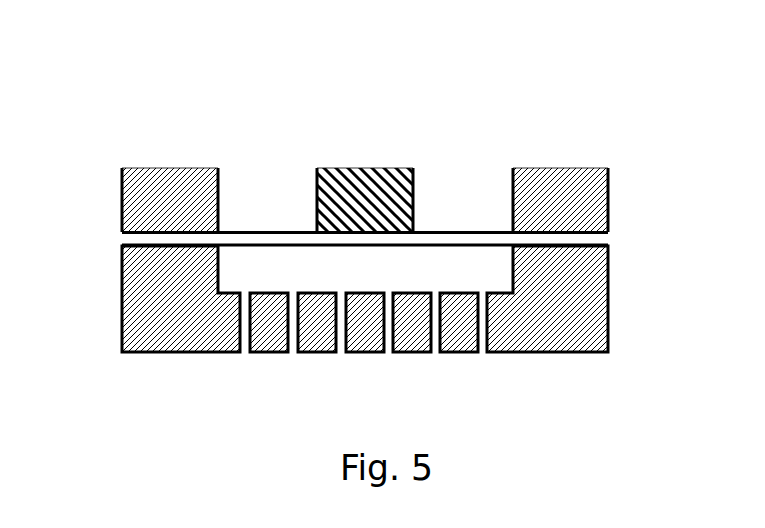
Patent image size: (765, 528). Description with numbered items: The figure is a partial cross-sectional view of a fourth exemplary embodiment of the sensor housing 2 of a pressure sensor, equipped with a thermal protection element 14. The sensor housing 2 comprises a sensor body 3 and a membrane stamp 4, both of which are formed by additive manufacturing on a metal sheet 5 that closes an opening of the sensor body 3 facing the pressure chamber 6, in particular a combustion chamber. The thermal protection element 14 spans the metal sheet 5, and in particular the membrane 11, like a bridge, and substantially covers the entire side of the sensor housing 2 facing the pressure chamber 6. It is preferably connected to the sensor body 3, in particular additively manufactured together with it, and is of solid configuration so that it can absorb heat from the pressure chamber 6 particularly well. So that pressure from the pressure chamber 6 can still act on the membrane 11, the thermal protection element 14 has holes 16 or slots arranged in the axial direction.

The sensor housing 2 is at (100, 142).
The sensor body 3 is at (608, 196).
The membrane stamp 4 is at (413, 195).
The metal sheet 5 is at (609, 239).
The pressure chamber 6 is at (384, 406).
The membrane 11 is at (272, 239).
The thermal protection element 14 is at (169, 353).
The holes 16 is at (246, 353).